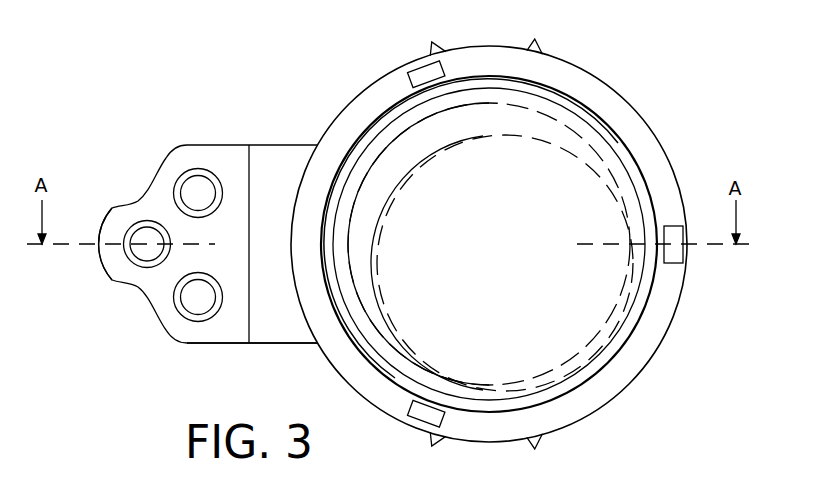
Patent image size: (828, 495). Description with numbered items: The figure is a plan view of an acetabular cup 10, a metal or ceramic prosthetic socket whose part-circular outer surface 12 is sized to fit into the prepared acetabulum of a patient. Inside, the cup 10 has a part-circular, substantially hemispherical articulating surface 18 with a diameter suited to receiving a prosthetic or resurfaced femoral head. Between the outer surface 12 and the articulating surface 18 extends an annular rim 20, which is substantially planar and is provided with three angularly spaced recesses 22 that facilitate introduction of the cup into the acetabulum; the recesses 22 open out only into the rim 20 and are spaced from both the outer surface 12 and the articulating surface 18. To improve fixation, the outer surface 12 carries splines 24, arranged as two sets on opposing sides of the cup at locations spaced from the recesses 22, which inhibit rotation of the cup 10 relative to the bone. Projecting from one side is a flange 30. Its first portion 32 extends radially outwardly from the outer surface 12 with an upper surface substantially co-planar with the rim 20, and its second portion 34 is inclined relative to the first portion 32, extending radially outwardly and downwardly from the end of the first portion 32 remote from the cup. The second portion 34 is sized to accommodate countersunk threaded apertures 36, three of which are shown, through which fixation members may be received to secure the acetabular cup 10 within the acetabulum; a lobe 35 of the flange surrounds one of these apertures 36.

The acetabular cup 10 is at (655, 64).
The outer surface 12 is at (676, 164).
The articulating surface 18 is at (626, 343).
The annular rim 20 is at (606, 390).
The recess 22 is at (407, 80).
The spline 24 is at (537, 44).
The flange 30 is at (150, 141).
The first portion 32 is at (265, 145).
The second portion 34 is at (205, 343).
The handle lobe 35 is at (113, 278).
The countersunk threaded aperture 36 is at (142, 236).